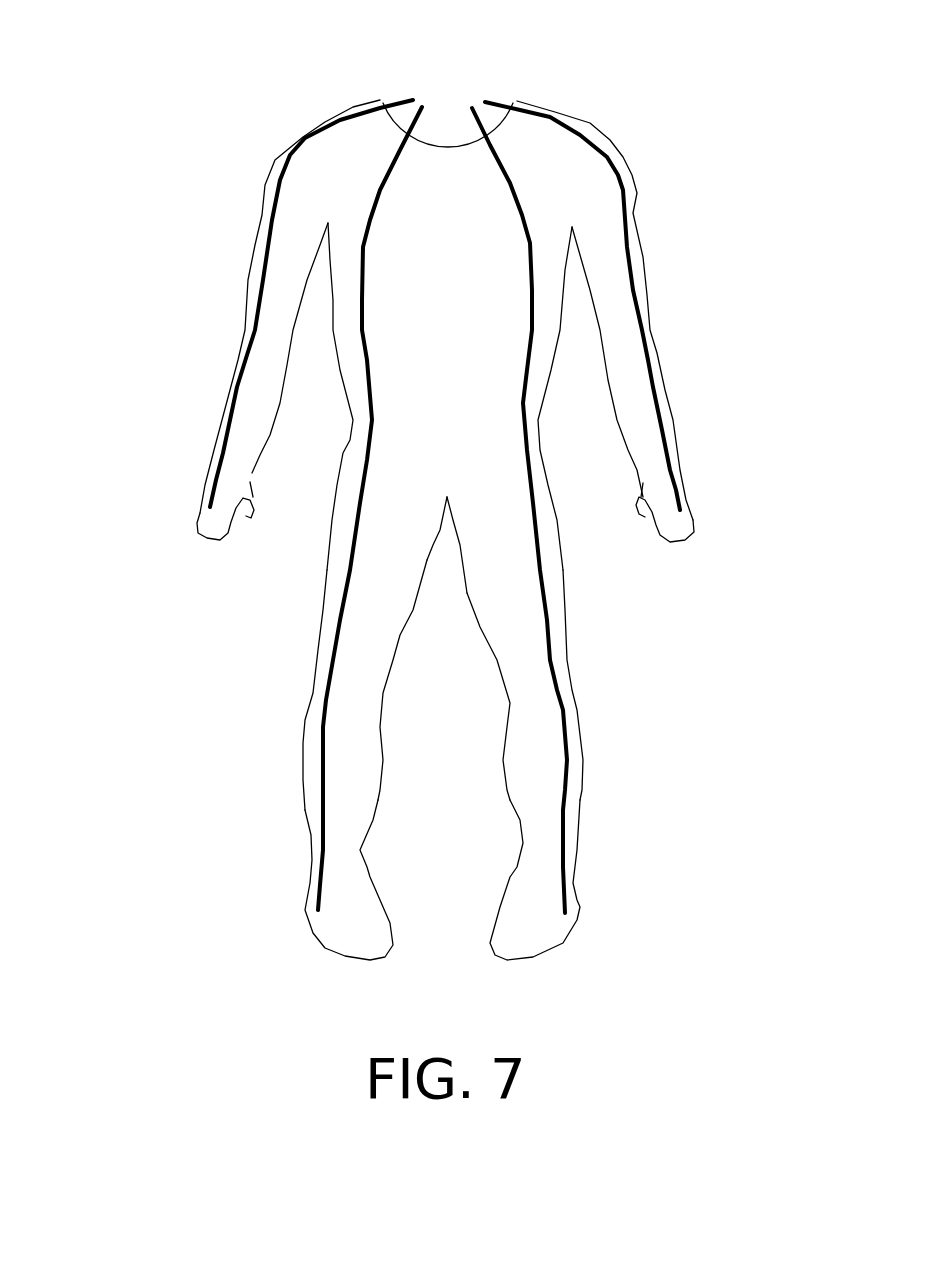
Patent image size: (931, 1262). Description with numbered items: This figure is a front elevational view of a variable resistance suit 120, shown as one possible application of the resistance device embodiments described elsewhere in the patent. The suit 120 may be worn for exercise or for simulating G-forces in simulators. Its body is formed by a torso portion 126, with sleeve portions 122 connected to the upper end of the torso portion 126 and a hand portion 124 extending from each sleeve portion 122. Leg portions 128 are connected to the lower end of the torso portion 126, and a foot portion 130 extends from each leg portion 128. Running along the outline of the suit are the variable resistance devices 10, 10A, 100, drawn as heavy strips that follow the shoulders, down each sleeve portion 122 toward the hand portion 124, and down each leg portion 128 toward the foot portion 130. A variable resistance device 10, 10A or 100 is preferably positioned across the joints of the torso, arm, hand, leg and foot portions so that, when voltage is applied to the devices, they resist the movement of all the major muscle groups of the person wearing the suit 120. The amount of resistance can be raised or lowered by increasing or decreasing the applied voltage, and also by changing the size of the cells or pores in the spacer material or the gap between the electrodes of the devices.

The variable resistance suit 120 is at (242, 82).
The variable resistance device 10 is at (439, 506).
The variable resistance device 10A is at (439, 506).
The variable resistance device 100 is at (627, 210).
The sleeve portion 122 is at (267, 388).
The hand portion 124 is at (230, 490).
The torso portion 126 is at (477, 200).
The leg portion 128 is at (530, 775).
The foot portion 130 is at (360, 923).